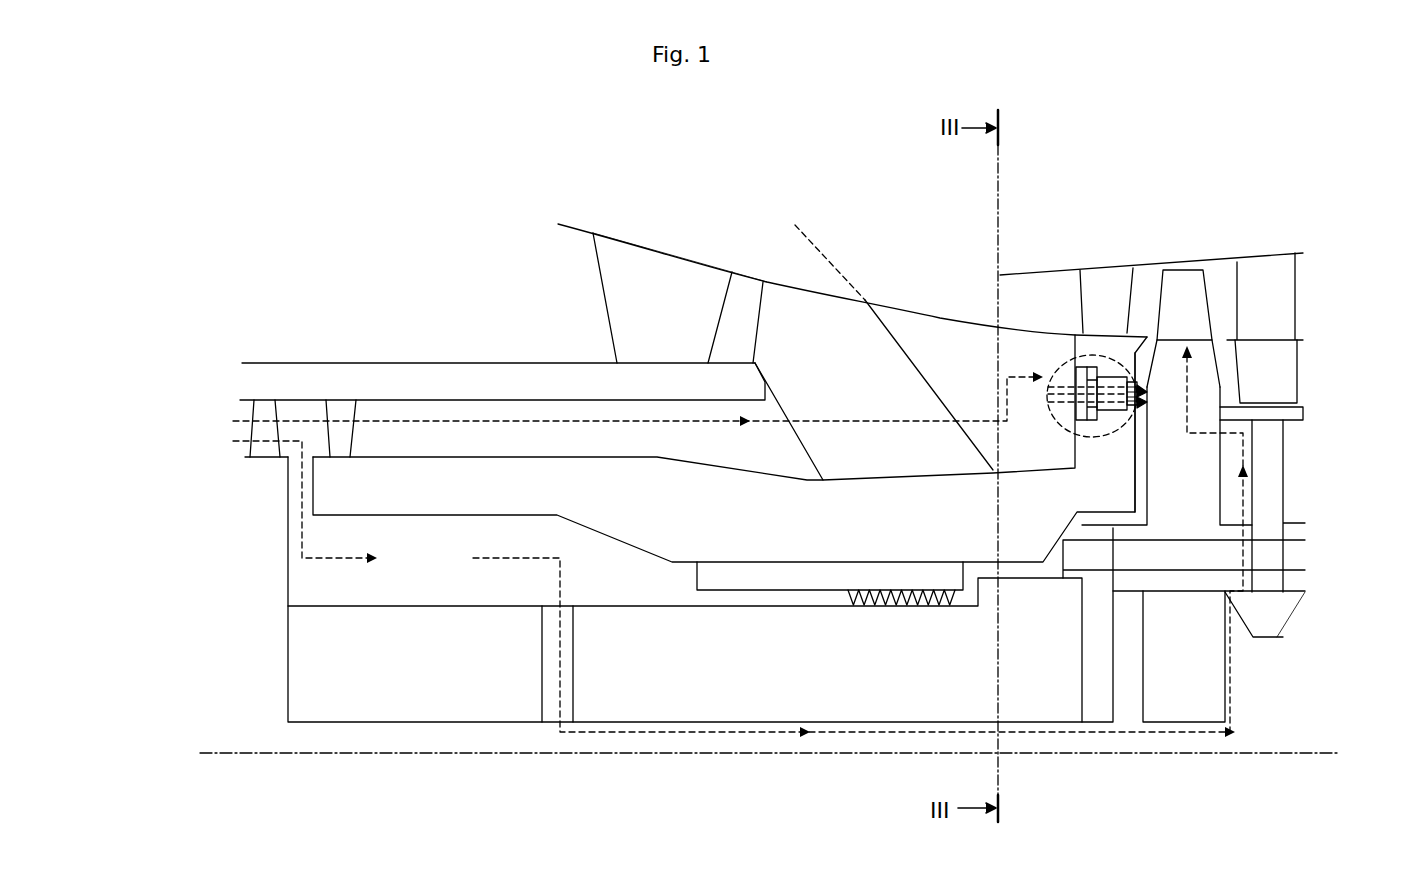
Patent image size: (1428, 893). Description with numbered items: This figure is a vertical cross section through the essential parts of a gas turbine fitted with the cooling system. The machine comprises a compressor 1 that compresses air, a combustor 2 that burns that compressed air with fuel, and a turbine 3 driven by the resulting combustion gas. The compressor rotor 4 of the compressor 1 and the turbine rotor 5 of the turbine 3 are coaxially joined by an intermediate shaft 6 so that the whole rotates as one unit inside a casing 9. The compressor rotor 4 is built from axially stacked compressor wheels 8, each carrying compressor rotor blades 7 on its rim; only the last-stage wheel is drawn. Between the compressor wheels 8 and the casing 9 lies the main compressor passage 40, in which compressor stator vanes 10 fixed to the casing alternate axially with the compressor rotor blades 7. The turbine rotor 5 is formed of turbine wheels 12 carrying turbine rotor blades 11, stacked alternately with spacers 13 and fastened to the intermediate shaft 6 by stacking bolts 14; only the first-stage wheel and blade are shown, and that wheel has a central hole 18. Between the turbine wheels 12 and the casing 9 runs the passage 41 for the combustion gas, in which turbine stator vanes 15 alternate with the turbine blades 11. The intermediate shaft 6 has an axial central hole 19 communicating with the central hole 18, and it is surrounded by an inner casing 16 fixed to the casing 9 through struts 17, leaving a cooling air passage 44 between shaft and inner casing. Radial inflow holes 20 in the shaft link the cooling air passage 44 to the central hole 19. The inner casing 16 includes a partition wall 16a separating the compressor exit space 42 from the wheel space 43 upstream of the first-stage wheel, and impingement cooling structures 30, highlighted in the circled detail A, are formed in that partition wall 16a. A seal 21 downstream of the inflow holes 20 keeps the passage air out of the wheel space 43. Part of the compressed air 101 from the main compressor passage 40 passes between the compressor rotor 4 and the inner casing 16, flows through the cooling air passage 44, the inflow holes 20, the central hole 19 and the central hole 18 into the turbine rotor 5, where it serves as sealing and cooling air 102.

The compressor 1 is at (276, 361).
The combustor 2 is at (676, 252).
The turbine 3 is at (1243, 251).
The compressor rotor 4 is at (242, 487).
The turbine rotor 5 is at (1286, 497).
The intermediate shaft 6 is at (687, 707).
The compressor rotor blades 7 is at (263, 412).
The compressor wheels 8 is at (252, 622).
The casing 9 is at (582, 287).
The compressor stator vanes 10 is at (342, 410).
The turbine rotor blades 11 is at (1182, 285).
The turbine wheels 12 is at (1200, 685).
The spacers 13 is at (1270, 617).
The stacking bolts 14 is at (1288, 553).
The turbine stator vanes 15 is at (1122, 283).
The inner casing 16 is at (563, 470).
The partition wall 16a is at (1078, 348).
The struts 17 is at (802, 340).
The central hole 18 is at (1173, 722).
The central hole 19 is at (475, 723).
The inflow holes 20 is at (545, 690).
The seal 21 is at (875, 580).
The impingement cooling structures 30 is at (1117, 360).
The main compressor passage 40 is at (443, 412).
The passage 41 is at (1217, 283).
The exit space 42 is at (947, 367).
The wheel space 43 is at (1230, 380).
The cooling air passage 44 is at (425, 578).
The compressed air 101 is at (502, 421).
The sealing air and cooling air 102 is at (1230, 672).
The region A is at (1070, 437).